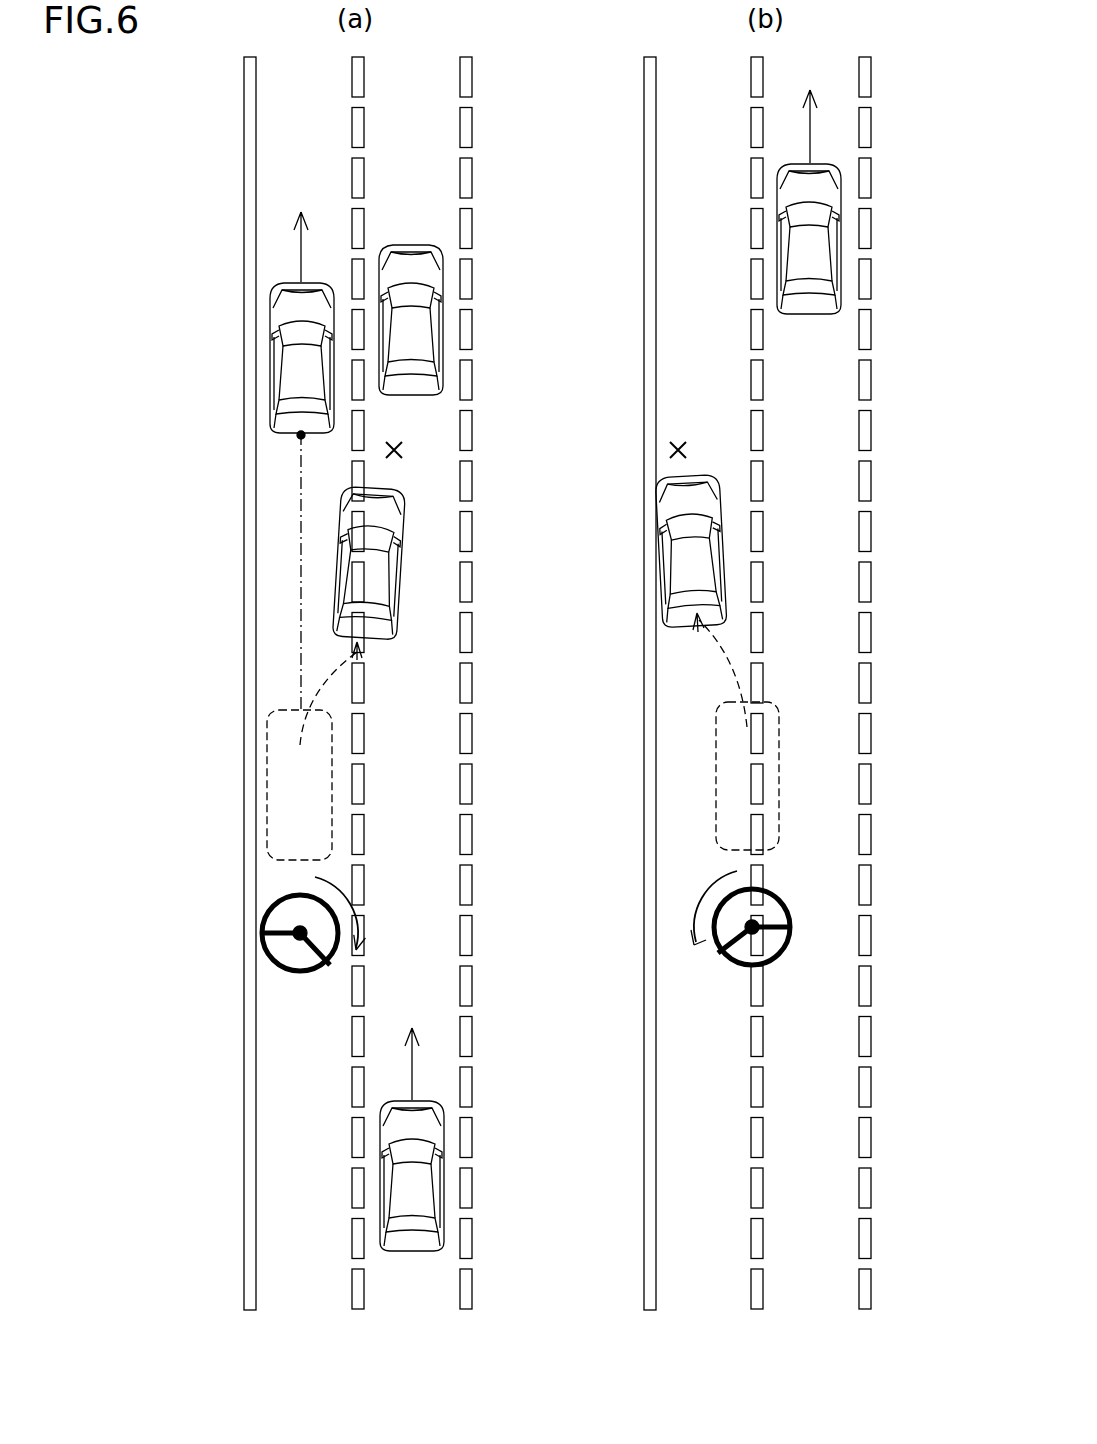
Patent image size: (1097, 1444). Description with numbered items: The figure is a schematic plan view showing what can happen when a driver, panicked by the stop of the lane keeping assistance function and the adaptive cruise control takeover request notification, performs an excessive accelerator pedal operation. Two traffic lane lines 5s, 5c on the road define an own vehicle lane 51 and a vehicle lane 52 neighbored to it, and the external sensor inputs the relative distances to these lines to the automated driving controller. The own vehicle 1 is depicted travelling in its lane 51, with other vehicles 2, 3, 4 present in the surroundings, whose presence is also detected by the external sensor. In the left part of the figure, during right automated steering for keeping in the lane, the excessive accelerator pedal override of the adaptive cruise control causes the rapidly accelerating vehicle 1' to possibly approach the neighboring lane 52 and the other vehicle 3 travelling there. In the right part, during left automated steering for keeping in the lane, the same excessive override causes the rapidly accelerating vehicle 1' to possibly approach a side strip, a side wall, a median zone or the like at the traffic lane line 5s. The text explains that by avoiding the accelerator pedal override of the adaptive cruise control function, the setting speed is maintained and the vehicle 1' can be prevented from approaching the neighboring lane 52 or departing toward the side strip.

The vehicle 1 is at (560, 701).
The rapidly accelerating vehicle 1' is at (529, 541).
The other vehicle 2 is at (270, 360).
The other vehicle 3 is at (445, 300).
The other vehicle 4 is at (443, 1213).
The traffic lane line 5s is at (243, 1287).
The traffic lane line 5c is at (353, 1290).
The lane 51 is at (303, 1280).
The lane 52 is at (407, 1280).